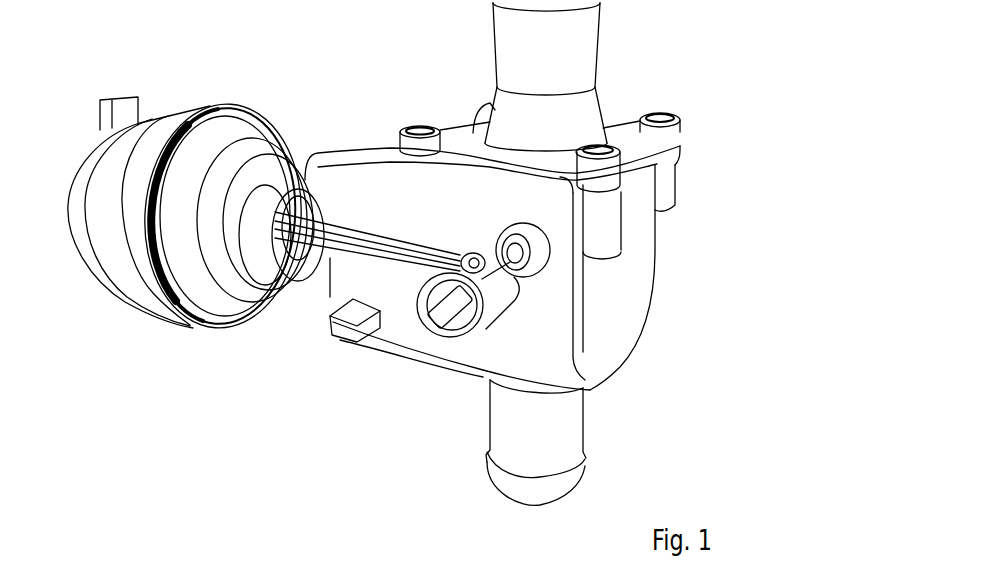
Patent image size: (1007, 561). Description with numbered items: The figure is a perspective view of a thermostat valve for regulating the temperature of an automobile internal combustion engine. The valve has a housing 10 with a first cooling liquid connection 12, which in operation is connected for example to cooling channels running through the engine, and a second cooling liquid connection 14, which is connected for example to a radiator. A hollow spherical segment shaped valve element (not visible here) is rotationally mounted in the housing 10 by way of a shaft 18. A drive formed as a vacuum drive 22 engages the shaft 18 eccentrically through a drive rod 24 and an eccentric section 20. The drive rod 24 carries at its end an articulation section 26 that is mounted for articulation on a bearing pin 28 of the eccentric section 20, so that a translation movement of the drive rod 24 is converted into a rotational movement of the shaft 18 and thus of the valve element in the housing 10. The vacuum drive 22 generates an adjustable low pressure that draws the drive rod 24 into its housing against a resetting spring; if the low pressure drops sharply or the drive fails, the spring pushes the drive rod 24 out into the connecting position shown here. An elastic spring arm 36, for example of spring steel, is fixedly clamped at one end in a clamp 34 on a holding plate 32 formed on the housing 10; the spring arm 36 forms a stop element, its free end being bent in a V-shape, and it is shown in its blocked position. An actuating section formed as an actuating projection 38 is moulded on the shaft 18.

The housing 10 is at (625, 308).
The first cooling liquid connection 12 is at (563, 120).
The second cooling liquid connection 14 is at (553, 407).
The shaft 18 is at (446, 384).
The eccentric section 20 is at (527, 230).
The vacuum drive 22 is at (114, 250).
The drive rod 24 is at (352, 233).
The articulation section 26 is at (486, 271).
The bearing pin 28 is at (483, 268).
The holding plate 32 is at (553, 340).
The clamp 34 is at (340, 325).
The spring arm 36 is at (378, 335).
The actuating projection 38 is at (425, 295).